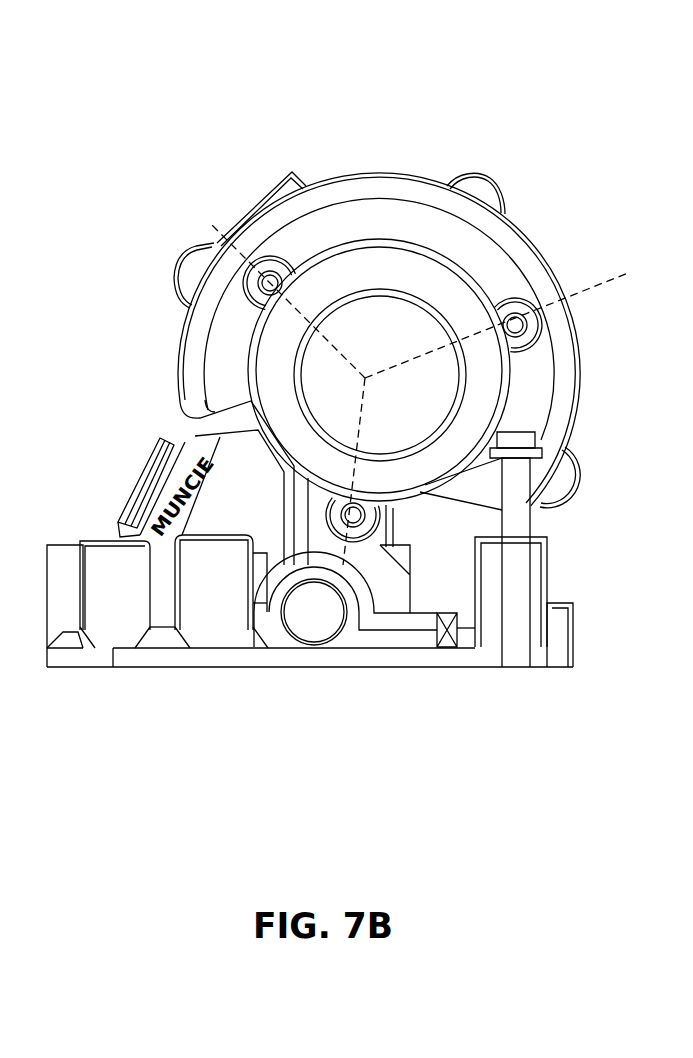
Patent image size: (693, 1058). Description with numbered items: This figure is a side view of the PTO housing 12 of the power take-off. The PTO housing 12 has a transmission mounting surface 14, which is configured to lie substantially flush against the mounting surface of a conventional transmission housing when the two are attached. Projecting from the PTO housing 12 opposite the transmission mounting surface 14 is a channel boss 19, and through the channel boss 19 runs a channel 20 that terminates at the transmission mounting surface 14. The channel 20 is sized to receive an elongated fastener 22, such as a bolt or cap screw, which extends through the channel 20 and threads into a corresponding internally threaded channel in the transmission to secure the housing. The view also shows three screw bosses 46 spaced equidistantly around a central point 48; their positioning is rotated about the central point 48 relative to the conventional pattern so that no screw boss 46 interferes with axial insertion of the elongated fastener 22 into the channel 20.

The PTO housing 12 is at (556, 180).
The transmission mounting surface 14 is at (458, 668).
The channel boss 19 is at (82, 592).
The channel 20 is at (515, 548).
The elongated fastener 22 is at (528, 513).
The screw boss 46 is at (265, 268).
The central point 48 is at (365, 378).